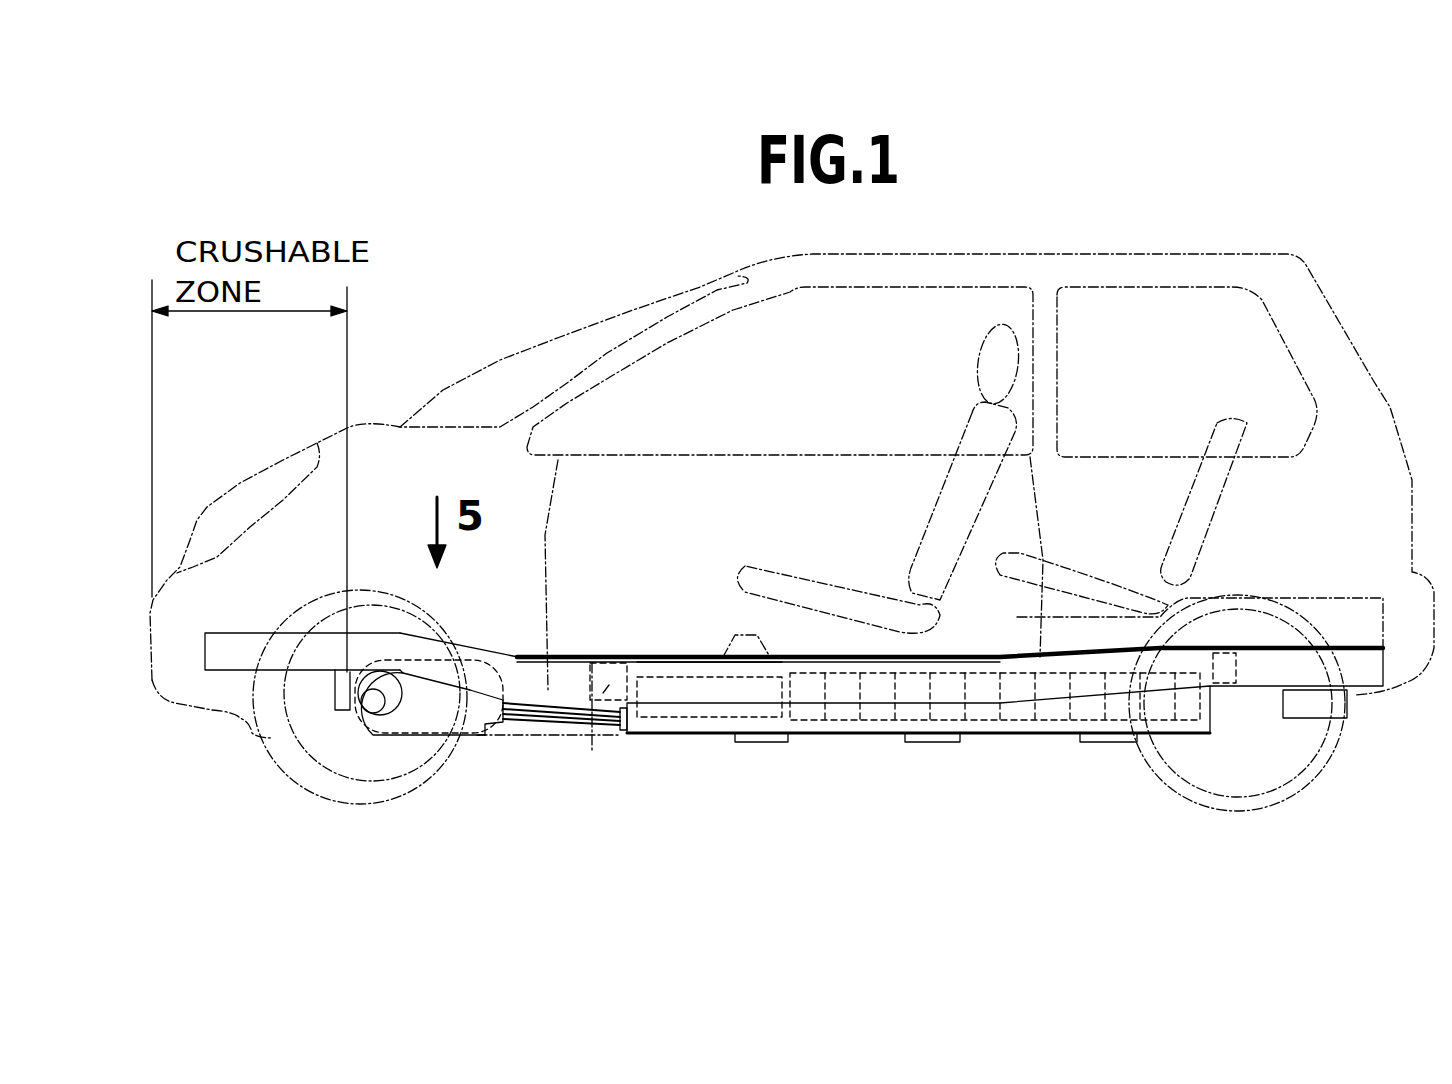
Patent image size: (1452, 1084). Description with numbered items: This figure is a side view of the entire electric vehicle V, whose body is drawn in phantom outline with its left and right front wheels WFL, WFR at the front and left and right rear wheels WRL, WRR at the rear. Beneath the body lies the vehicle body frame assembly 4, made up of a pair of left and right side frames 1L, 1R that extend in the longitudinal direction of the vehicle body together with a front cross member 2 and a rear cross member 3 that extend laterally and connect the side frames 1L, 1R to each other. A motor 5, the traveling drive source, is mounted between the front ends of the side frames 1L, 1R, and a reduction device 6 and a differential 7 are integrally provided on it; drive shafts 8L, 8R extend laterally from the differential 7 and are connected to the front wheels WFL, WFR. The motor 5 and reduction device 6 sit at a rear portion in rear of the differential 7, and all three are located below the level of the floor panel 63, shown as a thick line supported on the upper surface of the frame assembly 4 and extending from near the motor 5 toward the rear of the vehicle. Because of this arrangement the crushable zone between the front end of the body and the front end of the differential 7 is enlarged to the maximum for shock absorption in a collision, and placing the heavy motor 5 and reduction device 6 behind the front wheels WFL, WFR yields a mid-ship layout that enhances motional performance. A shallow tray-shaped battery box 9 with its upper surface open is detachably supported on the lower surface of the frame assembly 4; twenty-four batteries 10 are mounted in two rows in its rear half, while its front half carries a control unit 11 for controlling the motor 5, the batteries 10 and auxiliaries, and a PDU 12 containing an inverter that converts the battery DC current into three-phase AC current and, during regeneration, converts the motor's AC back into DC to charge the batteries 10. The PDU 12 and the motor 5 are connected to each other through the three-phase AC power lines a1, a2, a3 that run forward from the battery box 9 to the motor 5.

The electric vehicle V is at (620, 300).
The left side frame 1L is at (950, 607).
The right side frame 1R is at (653, 673).
The front cross member 2 is at (588, 730).
The rear cross member 3 is at (1223, 667).
The vehicle body frame assembly 4 is at (374, 622).
The motor 5 is at (450, 645).
The reduction device 6 is at (486, 726).
The differential 7 is at (350, 683).
The left drive shaft 8L is at (408, 724).
The right drive shaft 8R is at (372, 705).
The battery box 9 is at (1073, 730).
The batteries 10 is at (1010, 690).
The control unit 11 is at (767, 629).
The PDU (power drive unit) 12 is at (753, 690).
The floor panel 63 is at (672, 657).
The three-phase AC power line a1 is at (512, 722).
The three-phase AC power line a2 is at (535, 724).
The three-phase AC power line a3 is at (570, 722).
The left front wheel WFL is at (360, 739).
The right front wheel WFR is at (345, 802).
The left rear wheel WRL is at (1243, 742).
The right rear wheel WRR is at (1225, 806).